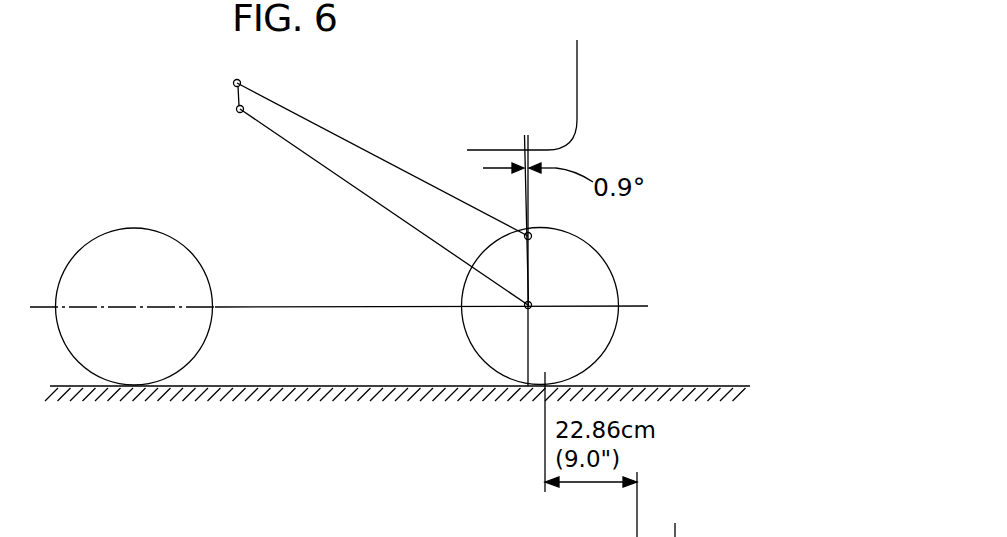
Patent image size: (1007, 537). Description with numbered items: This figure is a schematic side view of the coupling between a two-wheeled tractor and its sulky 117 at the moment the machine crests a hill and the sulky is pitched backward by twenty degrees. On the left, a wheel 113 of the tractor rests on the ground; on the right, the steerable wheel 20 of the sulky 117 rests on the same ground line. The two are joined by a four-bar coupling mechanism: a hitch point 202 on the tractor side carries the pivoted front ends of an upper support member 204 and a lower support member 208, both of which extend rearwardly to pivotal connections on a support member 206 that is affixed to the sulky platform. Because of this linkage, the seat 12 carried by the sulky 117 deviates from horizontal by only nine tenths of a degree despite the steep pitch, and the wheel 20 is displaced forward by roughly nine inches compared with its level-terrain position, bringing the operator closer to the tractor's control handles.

The seat 12 is at (578, 98).
The wheel 20 is at (583, 348).
The wheel 113 is at (187, 349).
The sulky 117 is at (623, 243).
The hitch point 202 is at (235, 95).
The upper support member 204 is at (330, 127).
The support member 206 is at (530, 262).
The lower support member 208 is at (340, 183).